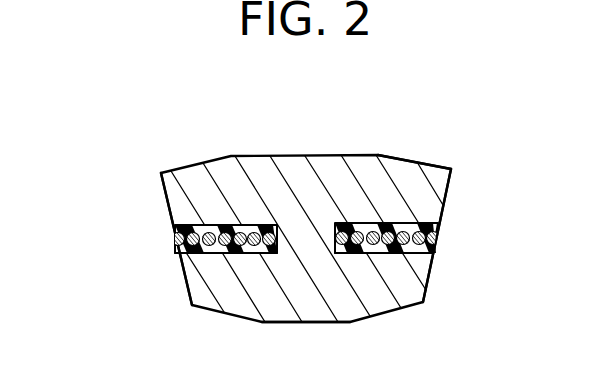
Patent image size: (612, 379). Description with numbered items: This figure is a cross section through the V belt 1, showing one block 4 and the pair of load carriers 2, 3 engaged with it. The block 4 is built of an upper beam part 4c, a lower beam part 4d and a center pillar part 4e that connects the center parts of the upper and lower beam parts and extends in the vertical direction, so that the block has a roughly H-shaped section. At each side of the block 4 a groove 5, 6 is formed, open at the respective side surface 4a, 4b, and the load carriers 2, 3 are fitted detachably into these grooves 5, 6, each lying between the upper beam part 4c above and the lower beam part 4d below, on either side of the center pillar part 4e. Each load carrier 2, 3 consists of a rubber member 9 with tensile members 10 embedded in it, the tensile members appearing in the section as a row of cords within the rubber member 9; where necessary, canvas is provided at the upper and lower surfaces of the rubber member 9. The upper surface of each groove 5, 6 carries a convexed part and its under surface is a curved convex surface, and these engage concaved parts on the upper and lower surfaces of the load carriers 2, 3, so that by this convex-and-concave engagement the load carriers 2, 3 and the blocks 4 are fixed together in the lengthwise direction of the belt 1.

The V belt 1 is at (383, 91).
The load carrier 2 is at (177, 250).
The load carrier 3 is at (438, 226).
The block 4 is at (350, 167).
The side surface 4a is at (164, 198).
The side surface 4b is at (449, 190).
The upper beam part 4c is at (417, 188).
The lower beam part 4d is at (349, 305).
The center pillar part 4e is at (307, 237).
The groove 5 is at (191, 255).
The groove 6 is at (396, 255).
The rubber member 9 is at (249, 226).
The tensile members 10 is at (277, 254).